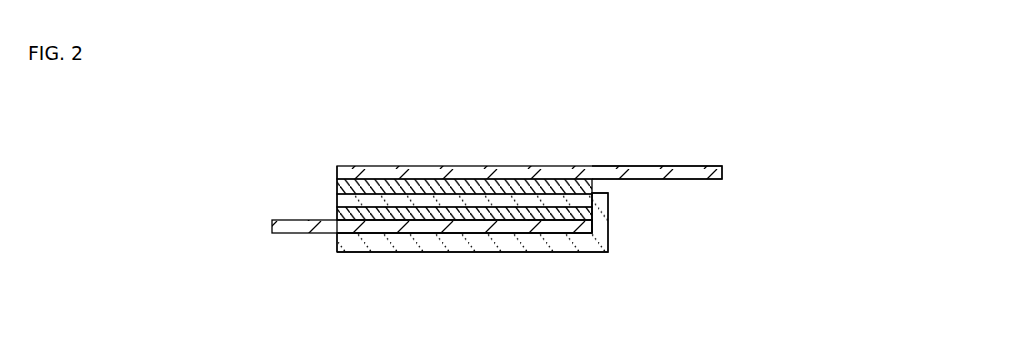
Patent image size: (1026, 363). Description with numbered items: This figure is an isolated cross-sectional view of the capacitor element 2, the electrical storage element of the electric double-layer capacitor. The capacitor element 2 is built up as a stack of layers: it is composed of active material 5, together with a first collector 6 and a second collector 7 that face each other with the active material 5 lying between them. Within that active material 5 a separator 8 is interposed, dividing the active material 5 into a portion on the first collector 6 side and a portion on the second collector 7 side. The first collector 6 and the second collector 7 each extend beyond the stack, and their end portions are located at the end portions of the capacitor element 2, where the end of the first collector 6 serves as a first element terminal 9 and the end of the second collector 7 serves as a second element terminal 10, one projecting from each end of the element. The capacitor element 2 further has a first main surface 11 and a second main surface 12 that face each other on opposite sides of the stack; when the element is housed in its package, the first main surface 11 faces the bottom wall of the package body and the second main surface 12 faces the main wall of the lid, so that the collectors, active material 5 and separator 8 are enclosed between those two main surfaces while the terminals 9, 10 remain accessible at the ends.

The capacitor element 2 is at (366, 90).
The active material 5 is at (442, 207).
The first collector 6 is at (396, 230).
The second collector 7 is at (556, 170).
The separator 8 is at (577, 245).
The first element terminal 9 is at (283, 228).
The second element terminal 10 is at (710, 170).
The first main surface 11 is at (473, 252).
The second main surface 12 is at (514, 167).